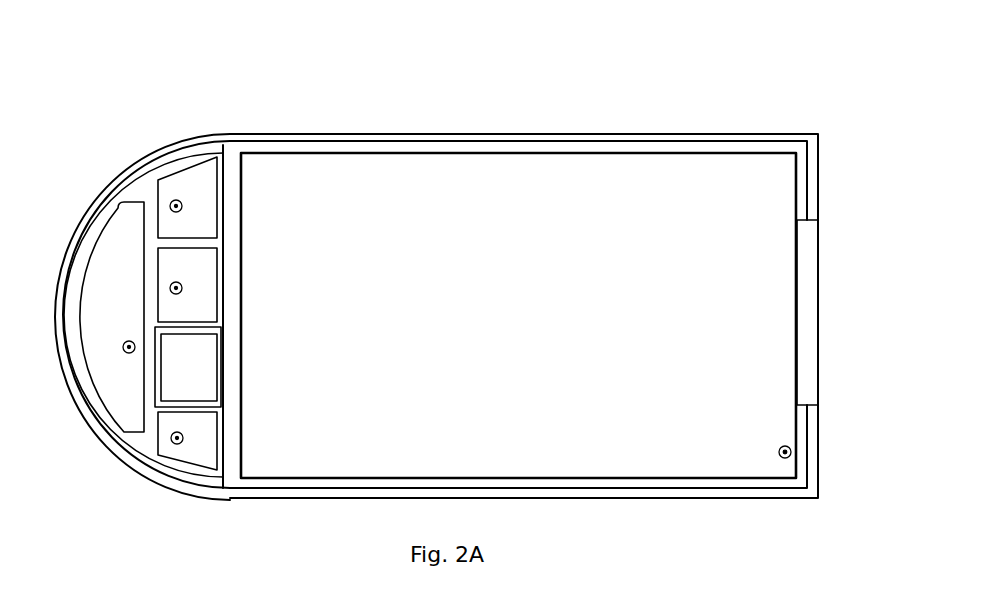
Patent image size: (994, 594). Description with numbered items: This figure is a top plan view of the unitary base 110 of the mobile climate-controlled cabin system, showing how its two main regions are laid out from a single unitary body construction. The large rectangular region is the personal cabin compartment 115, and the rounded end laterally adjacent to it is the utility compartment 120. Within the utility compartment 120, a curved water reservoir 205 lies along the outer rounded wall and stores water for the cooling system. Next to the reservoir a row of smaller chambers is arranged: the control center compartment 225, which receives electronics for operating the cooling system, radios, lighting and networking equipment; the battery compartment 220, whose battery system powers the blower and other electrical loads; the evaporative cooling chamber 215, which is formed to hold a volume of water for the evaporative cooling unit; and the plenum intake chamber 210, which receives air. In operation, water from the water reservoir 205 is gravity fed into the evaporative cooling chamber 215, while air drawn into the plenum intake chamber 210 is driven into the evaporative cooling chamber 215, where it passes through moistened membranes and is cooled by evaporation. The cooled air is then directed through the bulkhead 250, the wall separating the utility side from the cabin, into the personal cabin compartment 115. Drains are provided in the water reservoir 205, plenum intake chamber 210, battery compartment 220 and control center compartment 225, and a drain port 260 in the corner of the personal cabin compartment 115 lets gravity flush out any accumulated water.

The unitary base 110 is at (431, 283).
The personal cabin compartment 115 is at (330, 132).
The utility compartment 120 is at (148, 148).
The water reservoir 205 is at (118, 402).
The plenum intake chamber 210 is at (213, 445).
The evaporative cooling chamber 215 is at (208, 365).
The battery compartment 220 is at (215, 283).
The control center compartment 225 is at (208, 205).
The bulkhead 250 is at (247, 386).
The drain port 260 is at (778, 458).